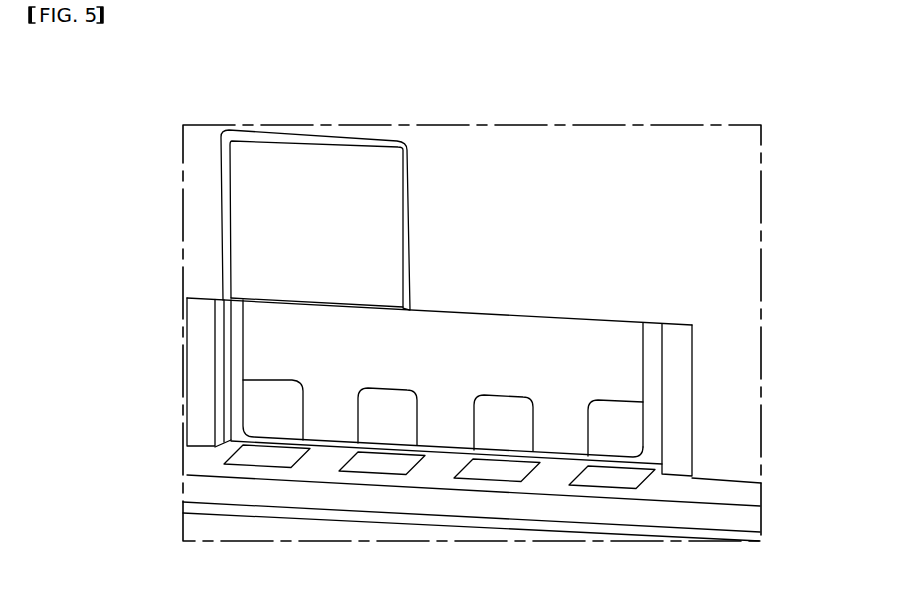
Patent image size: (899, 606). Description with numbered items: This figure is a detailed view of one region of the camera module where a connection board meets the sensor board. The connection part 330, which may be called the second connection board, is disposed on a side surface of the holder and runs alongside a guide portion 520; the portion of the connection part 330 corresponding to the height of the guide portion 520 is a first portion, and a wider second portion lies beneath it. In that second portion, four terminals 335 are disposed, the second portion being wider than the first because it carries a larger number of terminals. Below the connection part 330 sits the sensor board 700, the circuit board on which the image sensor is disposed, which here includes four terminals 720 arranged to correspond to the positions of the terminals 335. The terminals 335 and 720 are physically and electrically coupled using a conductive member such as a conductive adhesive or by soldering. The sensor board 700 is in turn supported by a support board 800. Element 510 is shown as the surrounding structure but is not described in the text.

The housing 510 is at (623, 303).
The guide portion 520 is at (265, 267).
The connection part 330 is at (623, 370).
The terminals 335 is at (265, 401).
The terminals 720 is at (265, 460).
The sensor board 700 is at (200, 492).
The support board 800 is at (197, 508).